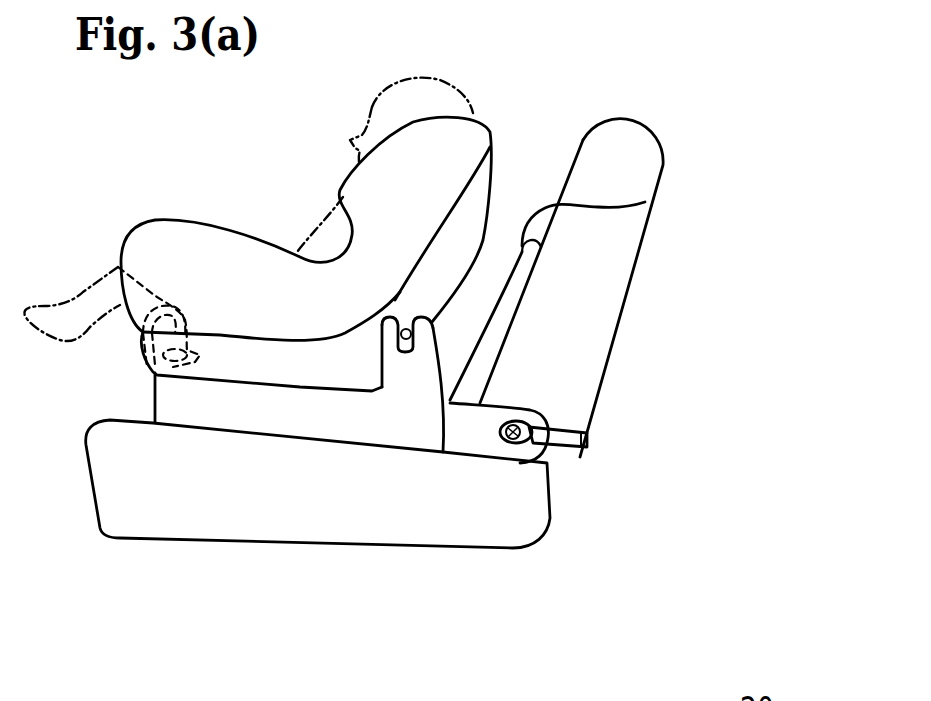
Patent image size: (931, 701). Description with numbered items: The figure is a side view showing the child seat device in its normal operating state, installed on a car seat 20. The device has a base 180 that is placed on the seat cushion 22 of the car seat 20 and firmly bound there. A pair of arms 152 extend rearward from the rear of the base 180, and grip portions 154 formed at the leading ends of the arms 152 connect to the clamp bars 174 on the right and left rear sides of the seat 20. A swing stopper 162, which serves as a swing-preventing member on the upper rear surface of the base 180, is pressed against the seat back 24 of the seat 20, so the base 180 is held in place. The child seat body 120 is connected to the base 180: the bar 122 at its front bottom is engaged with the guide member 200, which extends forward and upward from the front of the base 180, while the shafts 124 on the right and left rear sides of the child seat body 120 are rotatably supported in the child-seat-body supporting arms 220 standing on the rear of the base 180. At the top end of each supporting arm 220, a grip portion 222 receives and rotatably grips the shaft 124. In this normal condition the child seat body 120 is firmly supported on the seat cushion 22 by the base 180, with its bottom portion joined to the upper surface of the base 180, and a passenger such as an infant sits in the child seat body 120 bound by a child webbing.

The car seat 20 is at (693, 140).
The seat cushion 22 is at (427, 520).
The seat back 24 is at (600, 273).
The child seat body 120 is at (500, 117).
The bar 122 is at (143, 370).
The shaft 124 is at (407, 308).
The arms 152 is at (492, 404).
The grip portions 154 is at (545, 413).
The swing stopper 162 is at (645, 202).
The clamp bars 174 is at (580, 457).
The base 180 is at (247, 417).
The guide member 200 is at (118, 267).
The child-seat-body supporting arms 220 is at (400, 373).
The grip portion 222 is at (378, 340).